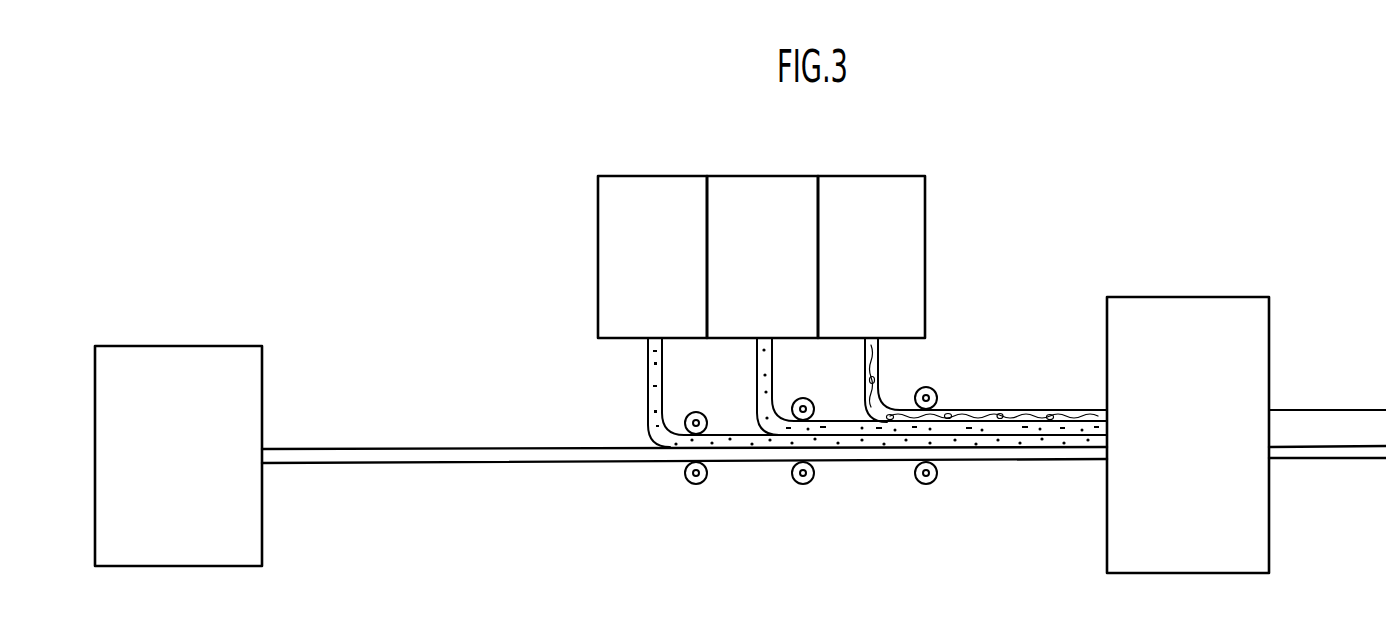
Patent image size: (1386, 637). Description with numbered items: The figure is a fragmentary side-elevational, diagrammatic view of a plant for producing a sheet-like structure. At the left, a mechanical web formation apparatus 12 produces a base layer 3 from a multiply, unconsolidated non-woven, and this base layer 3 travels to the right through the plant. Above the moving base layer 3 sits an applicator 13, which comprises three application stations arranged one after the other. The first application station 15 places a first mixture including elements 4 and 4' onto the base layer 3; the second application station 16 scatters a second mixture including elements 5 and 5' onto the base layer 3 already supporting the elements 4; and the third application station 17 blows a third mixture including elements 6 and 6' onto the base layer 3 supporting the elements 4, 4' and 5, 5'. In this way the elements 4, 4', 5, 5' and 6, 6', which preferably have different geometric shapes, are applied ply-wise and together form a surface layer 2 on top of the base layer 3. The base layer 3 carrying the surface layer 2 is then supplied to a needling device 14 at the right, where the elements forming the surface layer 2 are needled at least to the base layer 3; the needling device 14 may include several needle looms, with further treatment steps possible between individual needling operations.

The surface layer 2 is at (1336, 410).
The base layer 3 is at (545, 463).
The element 4 is at (855, 392).
The element 4' is at (679, 388).
The element 5 is at (932, 386).
The element 5' is at (885, 429).
The element 6 is at (986, 380).
The element 6' is at (962, 386).
The mechanical web formation apparatus 12 is at (262, 538).
The applicator 13 is at (852, 298).
The needling device 14 is at (1188, 297).
The application station 15 is at (650, 176).
The application station 16 is at (762, 176).
The application station 17 is at (873, 176).